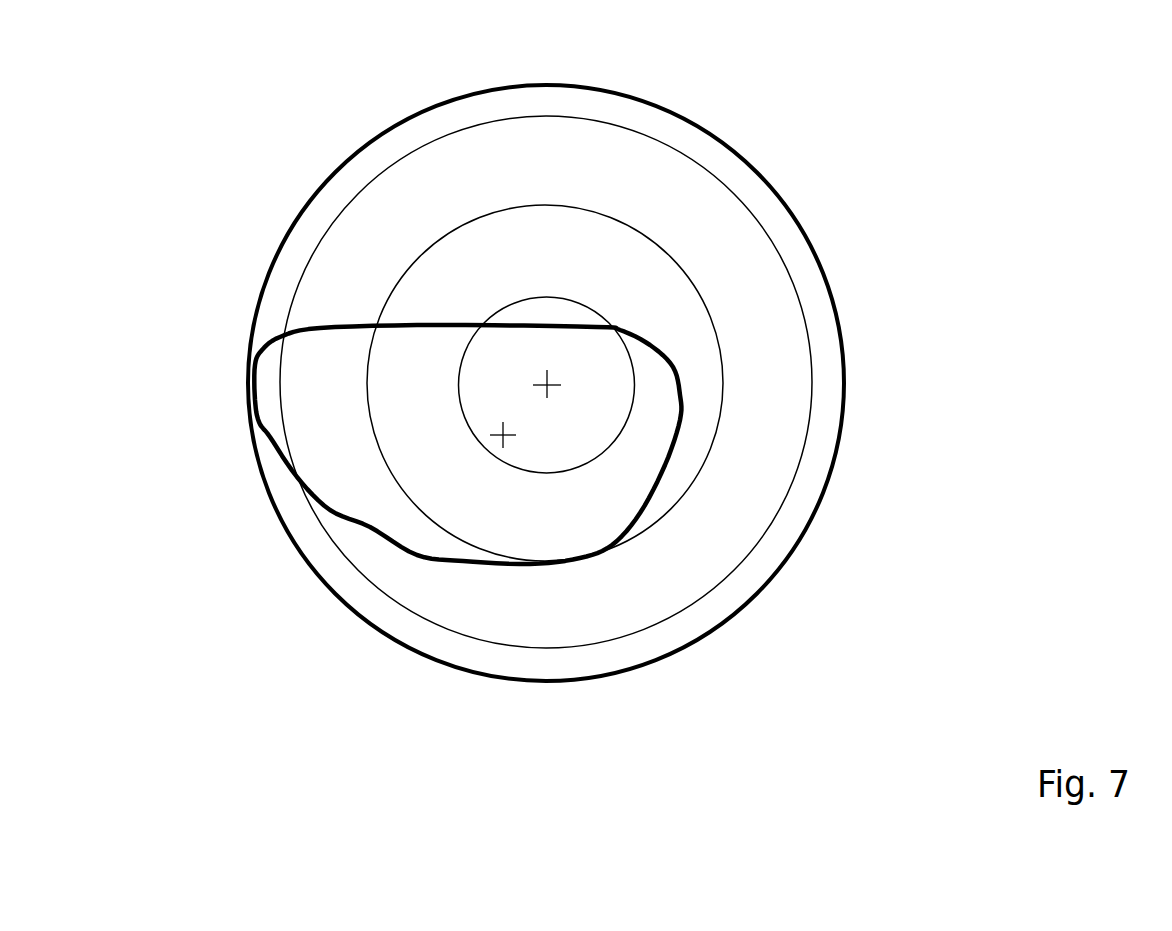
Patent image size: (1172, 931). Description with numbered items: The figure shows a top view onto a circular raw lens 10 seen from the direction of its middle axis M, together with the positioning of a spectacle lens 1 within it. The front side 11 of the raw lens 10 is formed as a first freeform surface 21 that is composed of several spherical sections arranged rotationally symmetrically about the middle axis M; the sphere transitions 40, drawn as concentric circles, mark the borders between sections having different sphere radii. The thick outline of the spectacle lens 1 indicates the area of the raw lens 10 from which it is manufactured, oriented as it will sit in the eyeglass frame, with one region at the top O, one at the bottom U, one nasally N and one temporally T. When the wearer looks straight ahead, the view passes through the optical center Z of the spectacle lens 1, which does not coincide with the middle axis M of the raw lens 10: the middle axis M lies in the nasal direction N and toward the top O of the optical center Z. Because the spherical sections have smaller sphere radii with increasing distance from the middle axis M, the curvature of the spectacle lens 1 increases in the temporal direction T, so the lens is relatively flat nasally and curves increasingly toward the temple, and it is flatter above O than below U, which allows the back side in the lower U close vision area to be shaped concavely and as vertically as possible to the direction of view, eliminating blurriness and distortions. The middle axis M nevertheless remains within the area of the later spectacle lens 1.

The raw lens 10 is at (690, 120).
The sphere transitions 40 is at (600, 312).
The front side 11 is at (772, 358).
The first freeform surface 21 is at (872, 343).
The spectacle lens 1 is at (510, 439).
The middle axis M is at (552, 386).
The nasal direction N is at (683, 442).
The optical center Z is at (641, 517).
The top O is at (358, 323).
The temporal direction T is at (268, 432).
The bottom U is at (412, 557).